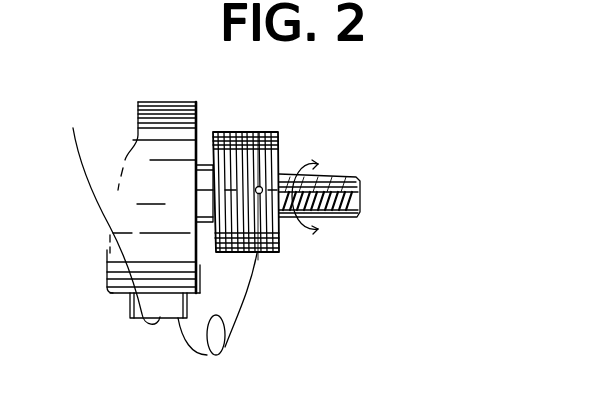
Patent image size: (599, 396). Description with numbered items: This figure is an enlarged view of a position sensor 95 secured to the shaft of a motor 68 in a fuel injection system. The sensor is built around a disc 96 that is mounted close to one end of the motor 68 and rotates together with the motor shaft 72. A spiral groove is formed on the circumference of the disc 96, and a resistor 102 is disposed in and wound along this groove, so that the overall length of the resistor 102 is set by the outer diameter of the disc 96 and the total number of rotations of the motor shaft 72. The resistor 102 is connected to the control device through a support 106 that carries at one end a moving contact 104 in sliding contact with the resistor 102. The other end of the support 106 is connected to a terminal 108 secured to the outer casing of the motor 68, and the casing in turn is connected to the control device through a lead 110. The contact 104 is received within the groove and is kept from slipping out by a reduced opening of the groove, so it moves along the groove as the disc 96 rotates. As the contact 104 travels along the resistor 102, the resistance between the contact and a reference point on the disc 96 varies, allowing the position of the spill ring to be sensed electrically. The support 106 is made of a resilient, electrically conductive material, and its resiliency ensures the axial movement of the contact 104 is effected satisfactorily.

The motor 68 is at (158, 110).
The motor shaft 72 is at (336, 218).
The position sensor 95 is at (274, 272).
The disc 96 is at (225, 130).
The resistor 102 is at (257, 145).
The moving contact 104 is at (263, 187).
The support 106 is at (240, 342).
The terminal 108 is at (172, 320).
The lead 110 is at (93, 201).